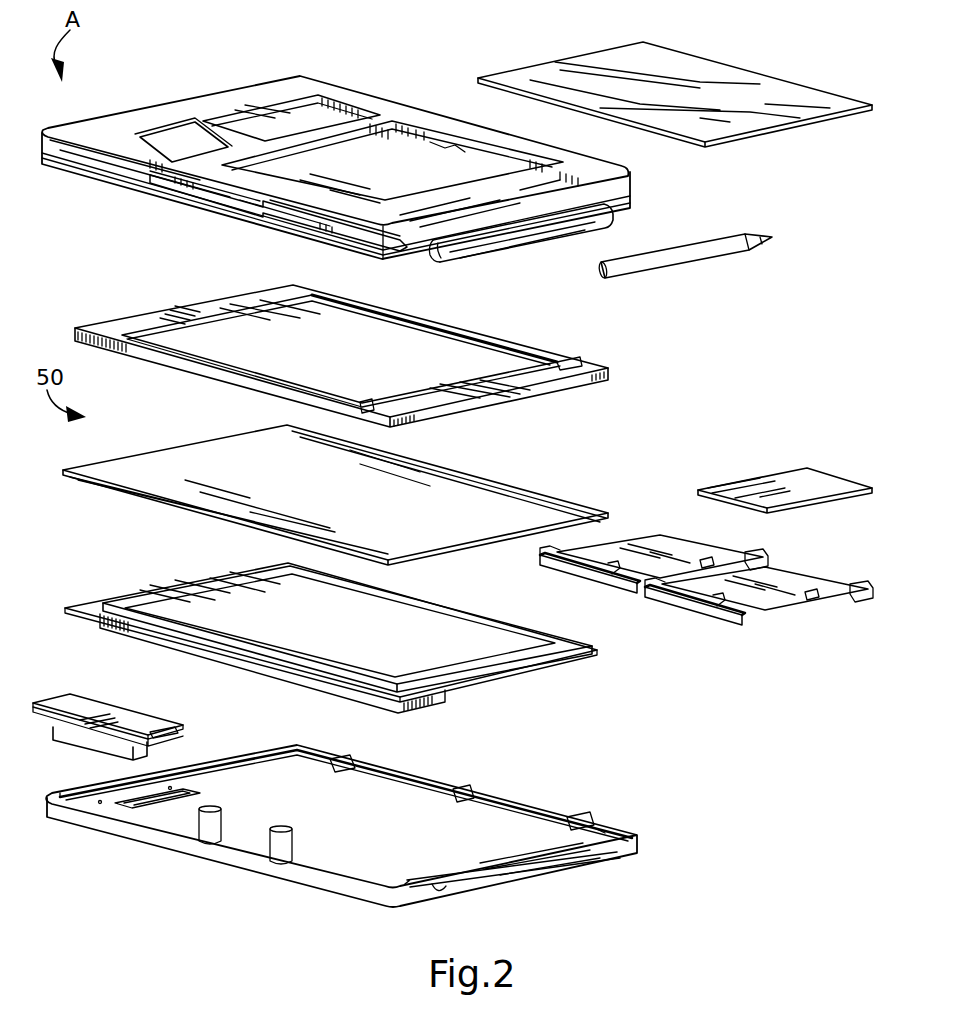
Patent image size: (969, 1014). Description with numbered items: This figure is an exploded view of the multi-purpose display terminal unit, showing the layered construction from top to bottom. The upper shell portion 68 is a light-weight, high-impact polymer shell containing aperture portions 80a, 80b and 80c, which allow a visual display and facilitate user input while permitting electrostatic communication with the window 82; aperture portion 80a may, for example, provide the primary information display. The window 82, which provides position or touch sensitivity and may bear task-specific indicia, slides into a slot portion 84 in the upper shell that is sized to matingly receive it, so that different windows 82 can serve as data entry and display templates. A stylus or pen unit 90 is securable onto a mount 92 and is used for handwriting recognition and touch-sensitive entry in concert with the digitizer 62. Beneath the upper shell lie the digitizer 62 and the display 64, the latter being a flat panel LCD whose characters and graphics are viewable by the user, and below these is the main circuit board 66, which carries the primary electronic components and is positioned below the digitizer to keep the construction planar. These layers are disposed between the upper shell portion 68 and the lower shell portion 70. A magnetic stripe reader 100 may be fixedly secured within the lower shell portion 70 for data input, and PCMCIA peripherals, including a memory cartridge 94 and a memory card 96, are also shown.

The upper shell portion 68 is at (593, 167).
The aperture portion 80a is at (393, 122).
The aperture portion 80b is at (313, 120).
The aperture portion 80c is at (197, 143).
The slot portion 84 is at (213, 193).
The window portion 82 is at (702, 82).
The mount 92 is at (590, 230).
The stylus or pen unit 90 is at (643, 273).
The display 64 is at (492, 363).
The digitizer 62 is at (487, 500).
The main circuit board 66 is at (507, 643).
The memory card 96 is at (783, 488).
The memory cartridge 94 is at (715, 613).
The magnetic stripe reader 100 is at (123, 720).
The lower shell portion 70 is at (577, 860).